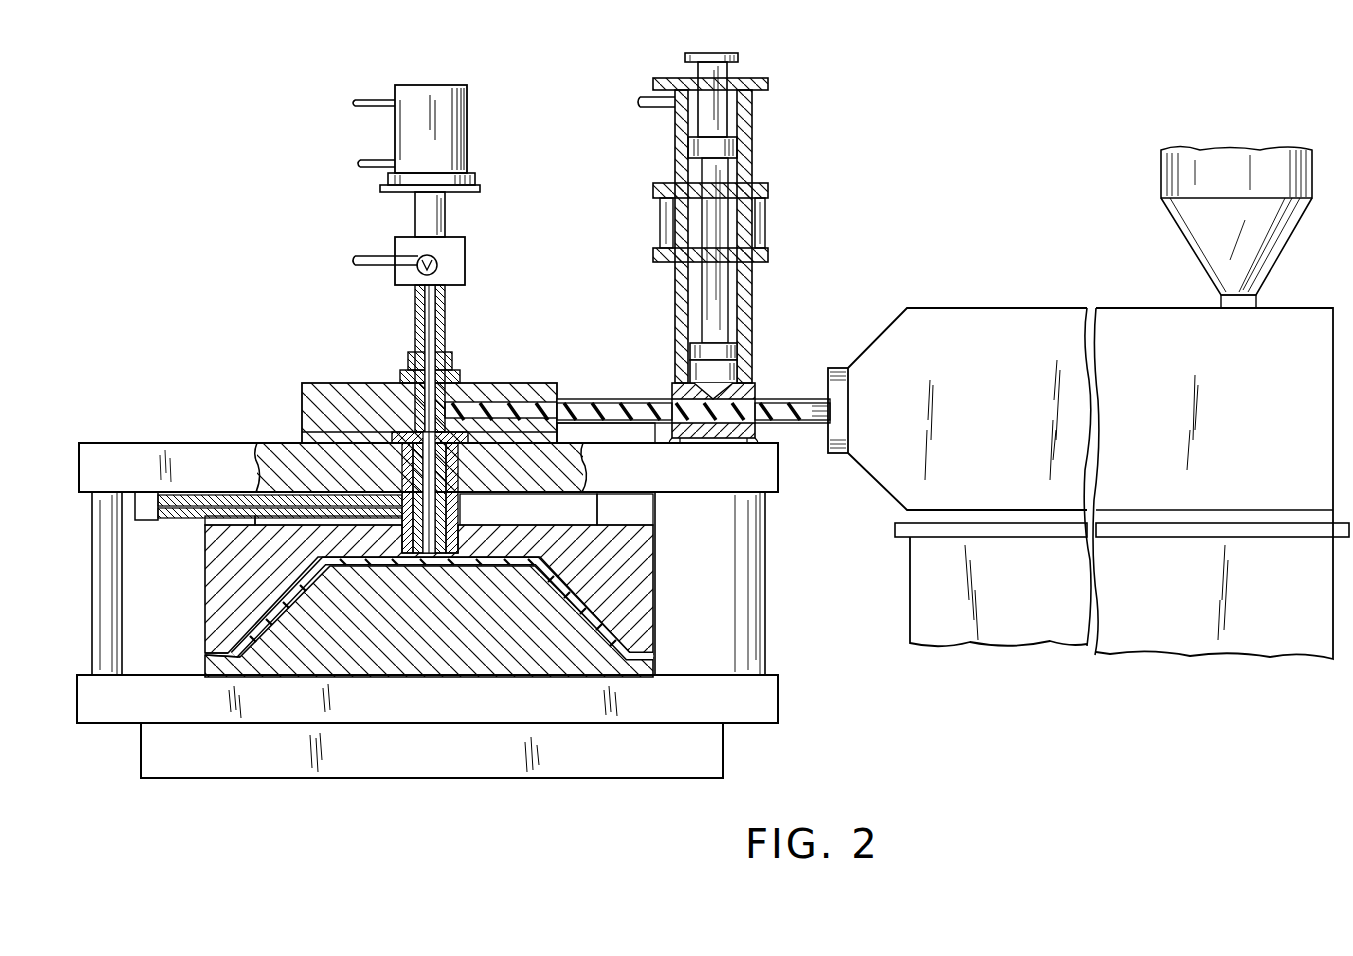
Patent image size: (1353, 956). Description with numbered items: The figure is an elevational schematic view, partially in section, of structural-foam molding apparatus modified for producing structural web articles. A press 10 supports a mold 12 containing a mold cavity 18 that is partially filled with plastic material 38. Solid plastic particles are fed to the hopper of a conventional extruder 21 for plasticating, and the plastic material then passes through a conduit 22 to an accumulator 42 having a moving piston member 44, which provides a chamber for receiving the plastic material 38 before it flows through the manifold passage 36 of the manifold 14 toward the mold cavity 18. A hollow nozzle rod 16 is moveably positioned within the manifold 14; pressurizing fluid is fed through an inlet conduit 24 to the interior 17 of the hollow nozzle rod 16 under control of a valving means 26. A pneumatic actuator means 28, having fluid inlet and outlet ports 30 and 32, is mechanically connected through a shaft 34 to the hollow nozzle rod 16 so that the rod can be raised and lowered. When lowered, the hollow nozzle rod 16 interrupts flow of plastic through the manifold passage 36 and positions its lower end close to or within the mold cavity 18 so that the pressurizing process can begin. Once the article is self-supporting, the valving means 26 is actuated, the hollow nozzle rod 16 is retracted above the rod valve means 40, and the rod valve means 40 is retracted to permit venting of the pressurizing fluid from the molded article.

The press 10 is at (722, 757).
The mold 12 is at (643, 570).
The manifold 14 is at (305, 392).
The hollow nozzle rod 16 is at (447, 341).
The interior of hollow nozzle rod 17 is at (432, 322).
The mold cavity 18 is at (235, 648).
The extruder 21 is at (1043, 311).
The conduit 22 is at (615, 401).
The inlet conduit 24 is at (372, 267).
The valving means 26 is at (438, 266).
The pneumatic actuator means 28 is at (458, 127).
The fluid inlet and outlet port 30 is at (363, 98).
The fluid inlet and outlet port 32 is at (364, 158).
The shaft 34 is at (418, 210).
The manifold passage 36 is at (505, 403).
The plastic material 38 is at (567, 595).
The rod valve means 40 is at (213, 505).
The accumulator 42 is at (764, 302).
The moving piston member 44 is at (736, 366).